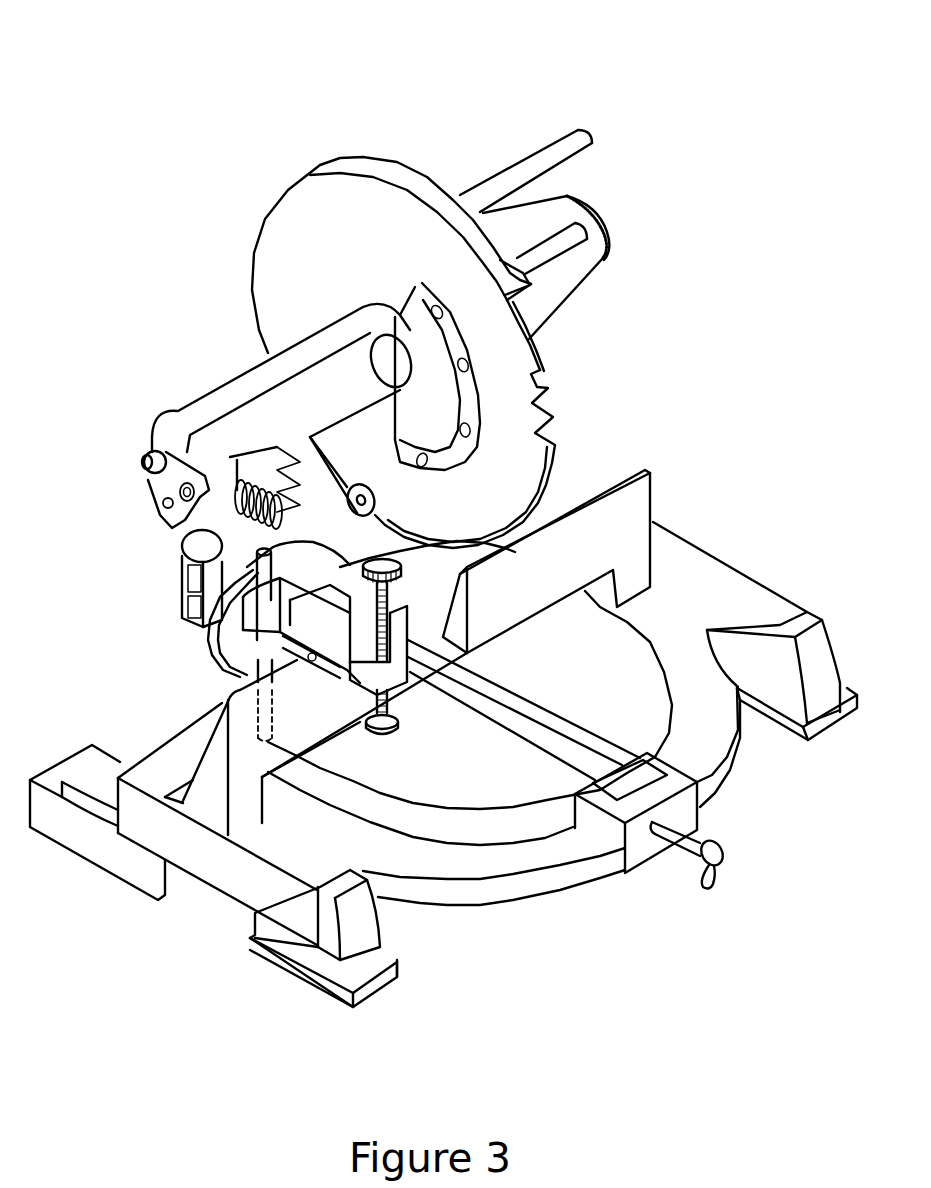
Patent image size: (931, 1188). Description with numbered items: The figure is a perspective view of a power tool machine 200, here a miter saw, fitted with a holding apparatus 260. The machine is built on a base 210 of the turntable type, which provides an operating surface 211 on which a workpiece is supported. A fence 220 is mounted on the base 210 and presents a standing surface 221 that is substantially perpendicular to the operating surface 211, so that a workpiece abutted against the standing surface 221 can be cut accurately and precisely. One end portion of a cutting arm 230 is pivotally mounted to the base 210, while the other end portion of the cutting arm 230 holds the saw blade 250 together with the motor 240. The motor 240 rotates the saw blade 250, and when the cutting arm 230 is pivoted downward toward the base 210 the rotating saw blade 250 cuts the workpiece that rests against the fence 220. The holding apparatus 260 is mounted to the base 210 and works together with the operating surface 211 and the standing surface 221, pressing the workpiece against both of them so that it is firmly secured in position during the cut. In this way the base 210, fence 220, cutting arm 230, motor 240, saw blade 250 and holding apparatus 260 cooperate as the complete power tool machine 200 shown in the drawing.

The power tool machine 200 is at (69, 79).
The base 210 is at (588, 896).
The operating surface 211 is at (448, 778).
The fence 220 is at (207, 803).
The standing surface 221 is at (642, 507).
The cutting arm 230 is at (187, 420).
The motor 240 is at (560, 208).
The saw blade 250 is at (528, 368).
The holding apparatus 260 is at (257, 617).